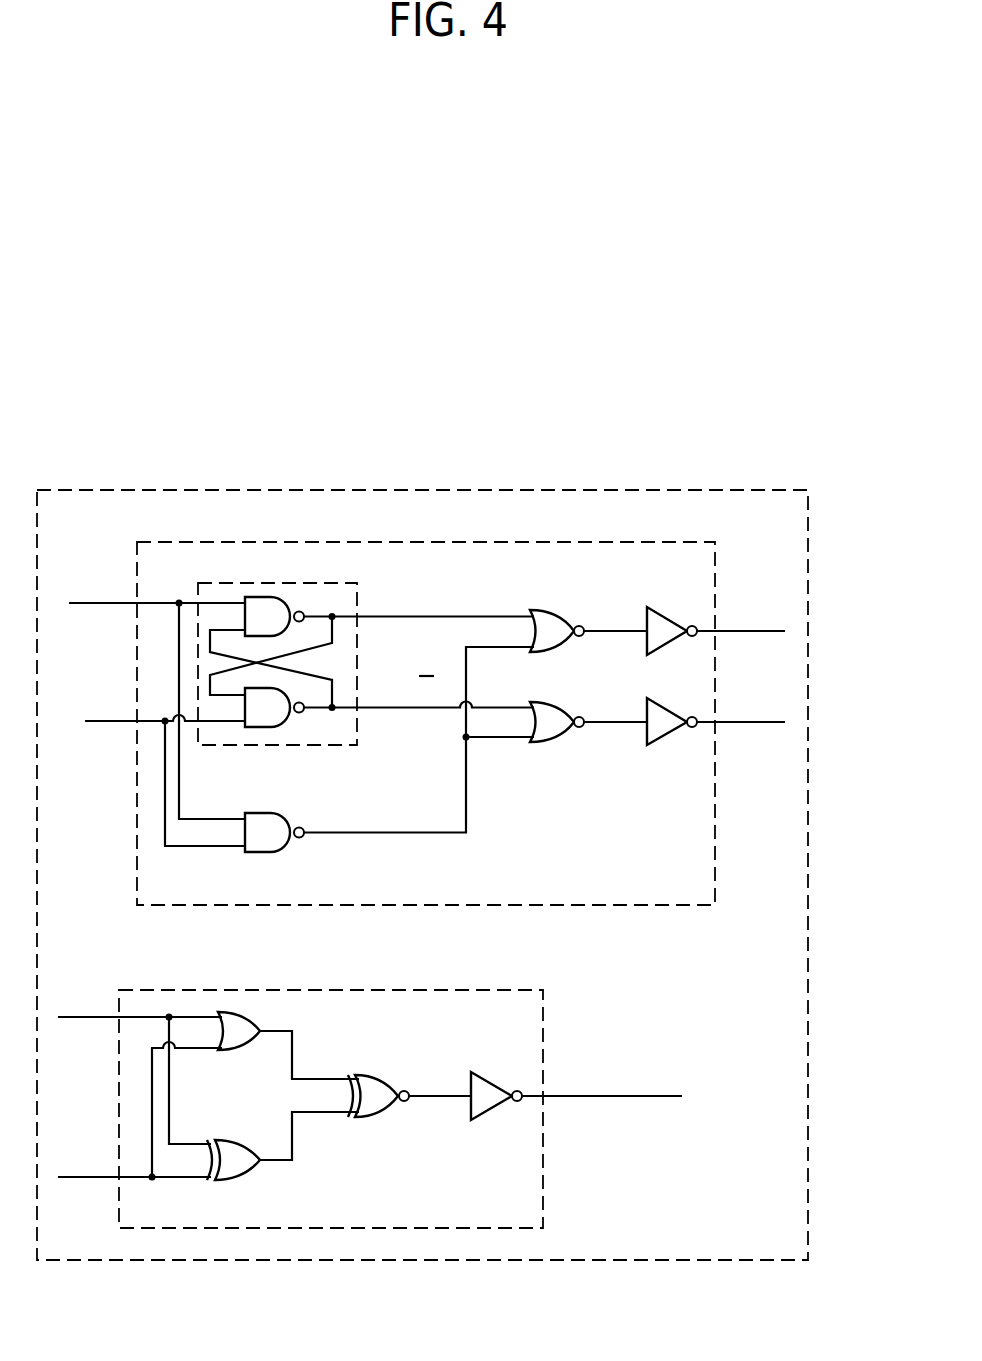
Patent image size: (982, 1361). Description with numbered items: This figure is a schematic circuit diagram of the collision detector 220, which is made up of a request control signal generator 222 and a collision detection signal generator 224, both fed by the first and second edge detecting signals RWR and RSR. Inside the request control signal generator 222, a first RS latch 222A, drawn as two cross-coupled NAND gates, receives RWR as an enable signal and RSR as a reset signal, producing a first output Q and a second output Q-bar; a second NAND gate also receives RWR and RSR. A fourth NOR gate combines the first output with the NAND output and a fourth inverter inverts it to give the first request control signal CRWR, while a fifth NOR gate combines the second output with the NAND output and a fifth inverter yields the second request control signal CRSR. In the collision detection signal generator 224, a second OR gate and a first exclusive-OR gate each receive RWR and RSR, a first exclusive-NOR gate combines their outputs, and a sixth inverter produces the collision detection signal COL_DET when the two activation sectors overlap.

The collision detector 220 is at (728, 442).
The request control signal generator 222 is at (643, 542).
The first RS latch 222A is at (322, 583).
The collision detection signal generator 224 is at (443, 990).